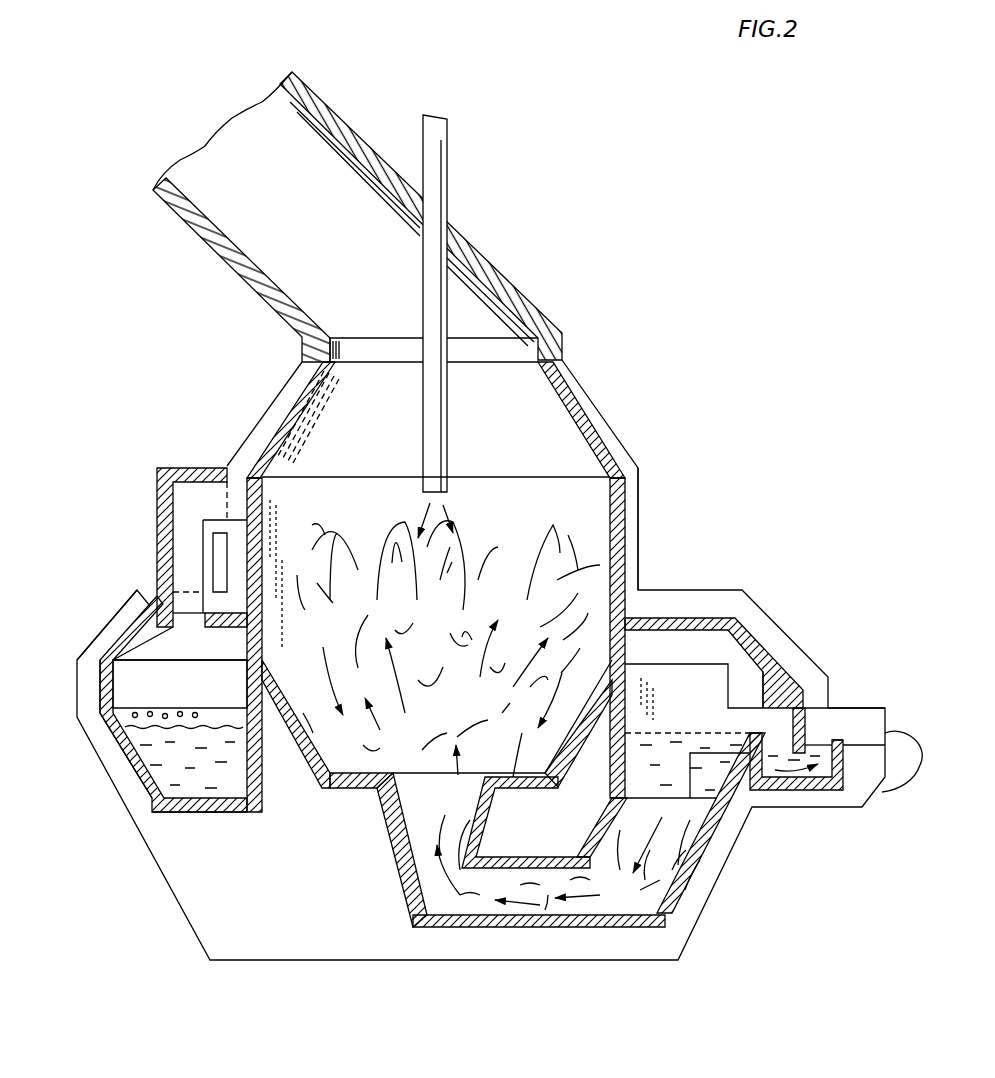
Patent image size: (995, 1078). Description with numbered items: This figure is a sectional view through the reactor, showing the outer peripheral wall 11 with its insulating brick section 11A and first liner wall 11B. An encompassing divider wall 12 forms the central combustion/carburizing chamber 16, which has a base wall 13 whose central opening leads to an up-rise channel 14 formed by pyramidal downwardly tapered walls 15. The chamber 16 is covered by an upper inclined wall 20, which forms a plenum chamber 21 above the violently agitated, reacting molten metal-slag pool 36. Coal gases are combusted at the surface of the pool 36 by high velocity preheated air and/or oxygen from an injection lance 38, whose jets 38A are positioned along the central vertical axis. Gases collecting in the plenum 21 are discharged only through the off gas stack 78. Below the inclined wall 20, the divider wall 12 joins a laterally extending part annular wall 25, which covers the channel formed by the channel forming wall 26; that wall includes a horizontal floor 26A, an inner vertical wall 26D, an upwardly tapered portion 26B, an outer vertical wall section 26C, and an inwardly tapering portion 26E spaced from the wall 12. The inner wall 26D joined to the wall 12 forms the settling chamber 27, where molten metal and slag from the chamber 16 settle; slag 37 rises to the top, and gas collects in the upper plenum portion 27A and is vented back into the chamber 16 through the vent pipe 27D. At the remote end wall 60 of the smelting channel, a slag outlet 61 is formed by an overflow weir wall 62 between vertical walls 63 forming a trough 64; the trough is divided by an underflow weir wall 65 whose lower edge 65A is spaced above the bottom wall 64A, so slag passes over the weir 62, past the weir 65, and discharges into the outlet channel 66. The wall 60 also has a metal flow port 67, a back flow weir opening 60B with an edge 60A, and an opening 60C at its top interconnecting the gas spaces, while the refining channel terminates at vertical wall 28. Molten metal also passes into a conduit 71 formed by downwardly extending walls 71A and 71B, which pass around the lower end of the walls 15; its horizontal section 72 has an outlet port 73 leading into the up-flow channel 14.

The outer peripheral wall 11 is at (614, 442).
The insulating brick section 11A is at (634, 512).
The first liner wall 11B is at (638, 472).
The divider wall 12 is at (608, 500).
The base wall 13 is at (522, 773).
The up-rise channel 14 is at (393, 845).
The pyramidal downwardly tapered walls 15 is at (402, 873).
The combustion/carburizing chamber 16 is at (326, 512).
The upper inclined wall 20 is at (295, 438).
The plenum chamber 21 is at (481, 416).
The part annular wall 25 is at (158, 606).
The channel forming wall 26 is at (105, 762).
The floor 26A is at (222, 790).
The upwardly tapered portion 26B is at (157, 765).
The outer vertical wall section 26C is at (83, 680).
The inner vertical wall 26D is at (262, 776).
The inwardly tapering portion 26E is at (135, 603).
The settling chamber 27 is at (226, 653).
The upper plenum portion 27A is at (170, 650).
The vent pipe 27D is at (185, 522).
The vertical wall 28 is at (213, 684).
The molten metal-slag pool 36 is at (558, 582).
The slag 37 is at (133, 716).
The injection lance 38 is at (447, 160).
The jets 38A is at (430, 503).
The end wall 60 is at (727, 647).
The edge 60A is at (742, 707).
The back flow weir opening 60B is at (748, 675).
The opening 60C is at (678, 648).
The slag outlet 61 is at (838, 705).
The overflow weir wall 62 is at (777, 758).
The vertical walls 63 is at (847, 723).
The trough 64 is at (912, 839).
The bottom wall 64A is at (818, 763).
The underflow weir wall 65 is at (805, 712).
The lower edge 65A is at (840, 757).
The outlet channel 66 is at (902, 761).
The metal flow port 67 is at (710, 780).
The conduit 71 is at (632, 902).
The downwardly extending wall 71A is at (707, 843).
The downwardly extending wall 71B is at (613, 850).
The horizontal section 72 is at (537, 897).
The outlet port 73 is at (445, 893).
The off gas stack 78 is at (322, 100).